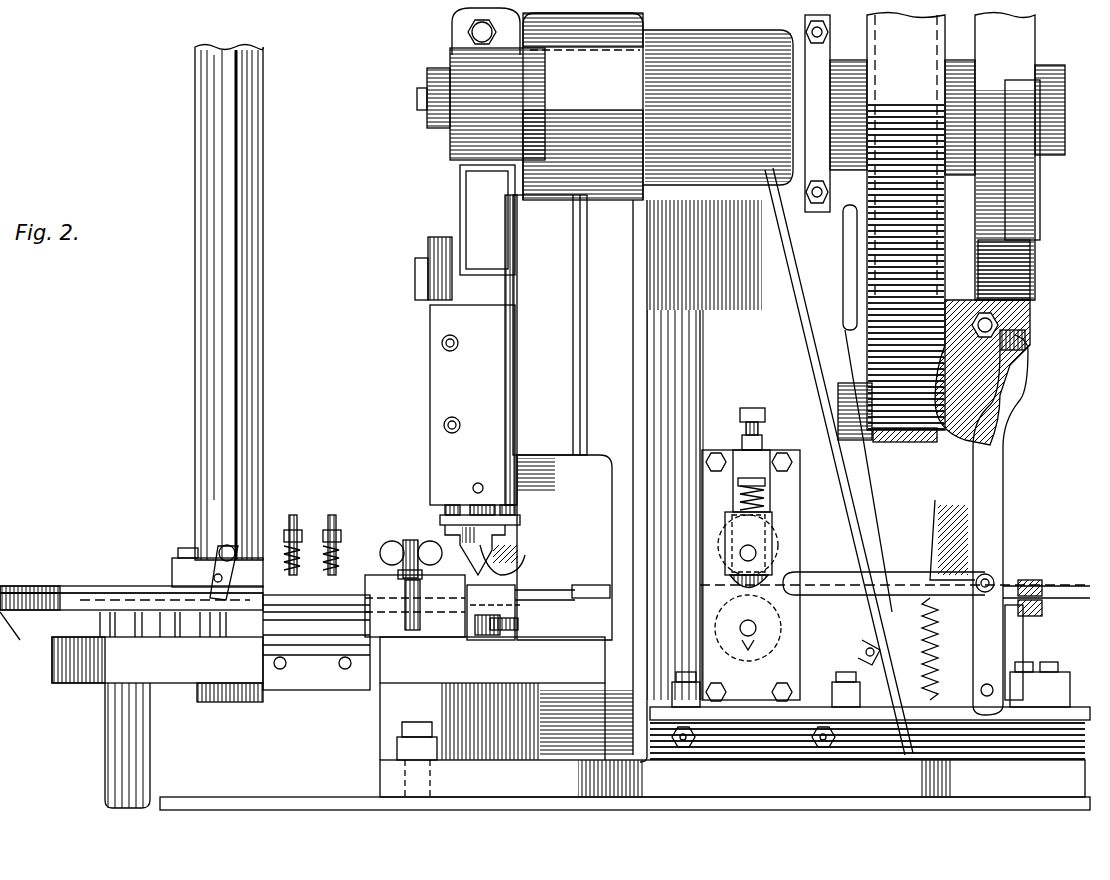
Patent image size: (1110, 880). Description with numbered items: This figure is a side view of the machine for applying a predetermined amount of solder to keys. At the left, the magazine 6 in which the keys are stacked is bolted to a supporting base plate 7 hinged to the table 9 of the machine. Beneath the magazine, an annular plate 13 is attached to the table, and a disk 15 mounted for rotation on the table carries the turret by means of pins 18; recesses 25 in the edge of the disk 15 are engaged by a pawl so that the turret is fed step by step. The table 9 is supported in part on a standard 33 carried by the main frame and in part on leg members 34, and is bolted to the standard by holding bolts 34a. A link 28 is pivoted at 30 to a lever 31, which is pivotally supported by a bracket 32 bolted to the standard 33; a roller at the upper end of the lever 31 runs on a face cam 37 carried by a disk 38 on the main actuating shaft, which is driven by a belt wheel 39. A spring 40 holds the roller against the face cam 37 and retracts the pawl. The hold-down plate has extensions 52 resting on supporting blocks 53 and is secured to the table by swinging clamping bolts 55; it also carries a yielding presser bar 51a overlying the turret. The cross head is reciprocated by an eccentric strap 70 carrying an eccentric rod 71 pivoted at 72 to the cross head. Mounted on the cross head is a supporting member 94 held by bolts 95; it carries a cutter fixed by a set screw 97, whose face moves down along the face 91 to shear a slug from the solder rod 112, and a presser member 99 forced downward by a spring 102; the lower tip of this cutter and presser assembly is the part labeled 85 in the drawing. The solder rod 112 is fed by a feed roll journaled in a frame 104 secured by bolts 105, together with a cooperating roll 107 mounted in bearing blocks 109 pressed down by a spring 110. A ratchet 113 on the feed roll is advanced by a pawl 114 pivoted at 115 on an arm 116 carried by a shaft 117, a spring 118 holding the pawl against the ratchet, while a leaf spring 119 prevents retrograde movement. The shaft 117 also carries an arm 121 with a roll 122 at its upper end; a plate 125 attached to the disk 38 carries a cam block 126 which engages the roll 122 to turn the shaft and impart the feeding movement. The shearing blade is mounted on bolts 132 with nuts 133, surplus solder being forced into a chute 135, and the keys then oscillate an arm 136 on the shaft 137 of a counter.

The magazine 6 is at (262, 213).
The supporting base plate 7 is at (172, 580).
The table 9 is at (157, 669).
The annular plate 13 is at (68, 615).
The disk 15 is at (208, 625).
The pins 18 is at (22, 637).
The recesses 25 is at (108, 628).
The link 28 is at (872, 560).
The pivot 30 is at (1014, 581).
The lever 31 is at (948, 515).
The bracket 32 is at (990, 385).
The standard 33 is at (735, 345).
The leg members 34 is at (135, 745).
The holding bolts 34a is at (518, 625).
The face cam 37 is at (1010, 278).
The disk 38 is at (1005, 157).
The belt wheel 39 is at (906, 222).
The spring 40 is at (872, 650).
The yielding presser bar 51a is at (70, 578).
The extensions 52 is at (417, 596).
The supporting blocks 53 is at (479, 624).
The swinging clamping bolts 55 is at (408, 548).
The eccentric strap 70 is at (470, 133).
The eccentric rod 71 is at (485, 200).
The pivot 72 is at (420, 287).
The cutter tip 85 is at (500, 562).
The face 91 is at (470, 598).
The supporting member 94 is at (452, 385).
The bolts 95 is at (458, 343).
The set screw 97 is at (480, 486).
The presser member 99 is at (468, 545).
The spring 102 is at (500, 512).
The frame 104 is at (785, 480).
The bolts 105 is at (690, 648).
The cooperating roll 107 is at (805, 525).
The bearing blocks 109 is at (740, 533).
The spring 110 is at (734, 497).
The solder rod 112 is at (548, 592).
The ratchet 113 is at (720, 612).
The pawl 114 is at (740, 580).
The pivot 115 is at (1012, 560).
The arm 116 is at (1002, 585).
The shaft 117 is at (990, 690).
The spring 118 is at (985, 645).
The leaf spring 119 is at (752, 664).
The arm 121 is at (990, 455).
The roll 122 is at (1012, 343).
The plate 125 is at (1032, 102).
The cam block 126 is at (1022, 172).
The bolts 132 is at (297, 515).
The nuts 133 is at (338, 518).
The chute 135 is at (316, 642).
The arm 136 is at (216, 576).
The shaft 137 is at (222, 540).